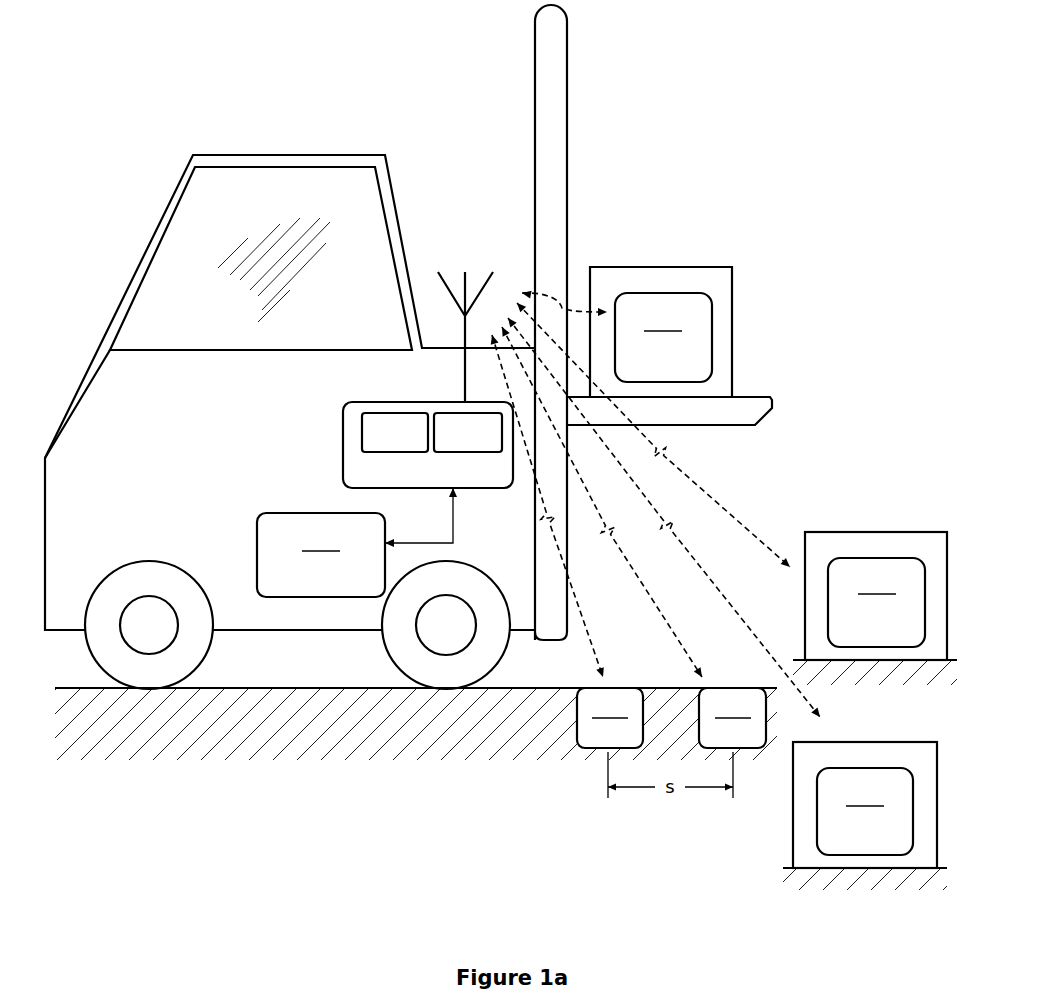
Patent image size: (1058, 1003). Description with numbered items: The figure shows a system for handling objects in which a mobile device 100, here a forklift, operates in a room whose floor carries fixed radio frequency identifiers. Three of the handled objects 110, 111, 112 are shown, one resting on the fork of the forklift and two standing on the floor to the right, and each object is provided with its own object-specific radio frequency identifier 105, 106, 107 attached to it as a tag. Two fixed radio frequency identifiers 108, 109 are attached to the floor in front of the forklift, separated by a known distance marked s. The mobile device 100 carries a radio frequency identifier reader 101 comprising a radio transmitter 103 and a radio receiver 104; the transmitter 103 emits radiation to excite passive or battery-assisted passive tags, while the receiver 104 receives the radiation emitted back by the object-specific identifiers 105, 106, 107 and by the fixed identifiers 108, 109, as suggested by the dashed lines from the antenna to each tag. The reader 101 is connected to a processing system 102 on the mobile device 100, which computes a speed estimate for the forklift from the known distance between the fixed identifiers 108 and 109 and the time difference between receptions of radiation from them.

The mobile device 100 is at (285, 155).
The radio frequency identifier reader 101 is at (343, 448).
The processing system 102 is at (321, 555).
The radio transmitter 103 is at (370, 413).
The radio receiver 104 is at (448, 413).
The object-specific radio frequency identifier 105 is at (663, 337).
The object-specific radio frequency identifier 106 is at (876, 602).
The object-specific radio frequency identifier 107 is at (865, 811).
The fixed radio frequency identifier 108 is at (610, 718).
The fixed radio frequency identifier 109 is at (732, 718).
The object 110 is at (683, 267).
The object 111 is at (843, 532).
The object 112 is at (835, 742).